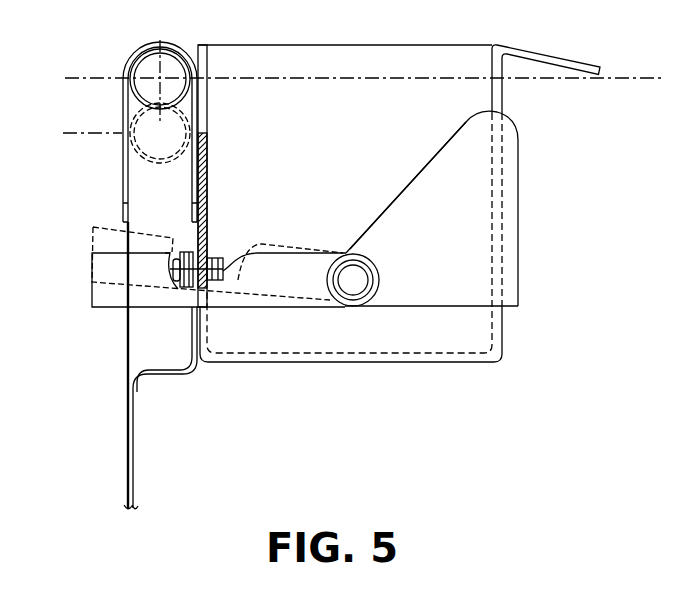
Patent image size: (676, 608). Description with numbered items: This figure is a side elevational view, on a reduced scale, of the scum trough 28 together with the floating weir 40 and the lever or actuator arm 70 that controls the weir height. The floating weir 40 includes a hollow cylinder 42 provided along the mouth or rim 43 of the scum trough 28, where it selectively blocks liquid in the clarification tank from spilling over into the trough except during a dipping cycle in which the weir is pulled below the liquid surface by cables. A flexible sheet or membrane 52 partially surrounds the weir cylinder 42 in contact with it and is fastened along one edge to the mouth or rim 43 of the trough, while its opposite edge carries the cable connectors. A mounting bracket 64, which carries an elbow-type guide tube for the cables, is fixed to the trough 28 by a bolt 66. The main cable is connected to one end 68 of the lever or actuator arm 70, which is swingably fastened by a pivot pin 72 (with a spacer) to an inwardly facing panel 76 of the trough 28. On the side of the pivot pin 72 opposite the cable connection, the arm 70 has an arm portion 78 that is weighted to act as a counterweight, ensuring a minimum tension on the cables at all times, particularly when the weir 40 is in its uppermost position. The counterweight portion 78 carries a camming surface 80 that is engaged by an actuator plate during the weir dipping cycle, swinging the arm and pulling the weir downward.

The scum trough 28 is at (488, 40).
The floating weir 40 is at (188, 36).
The hollow cylinder 42 is at (158, 48).
The mouth or rim 43 is at (200, 127).
The flexible sheet or membrane 52 is at (124, 108).
The mounting bracket 64 is at (133, 451).
The bolt 66 is at (227, 272).
The end of lever or actuator arm 68 is at (92, 300).
The lever or actuator arm 70 is at (87, 326).
The pivot pin 72 is at (353, 282).
The inwardly facing panel 76 is at (470, 343).
The arm portion (counterweight portion) 78 is at (461, 255).
The camming surface 80 is at (462, 128).